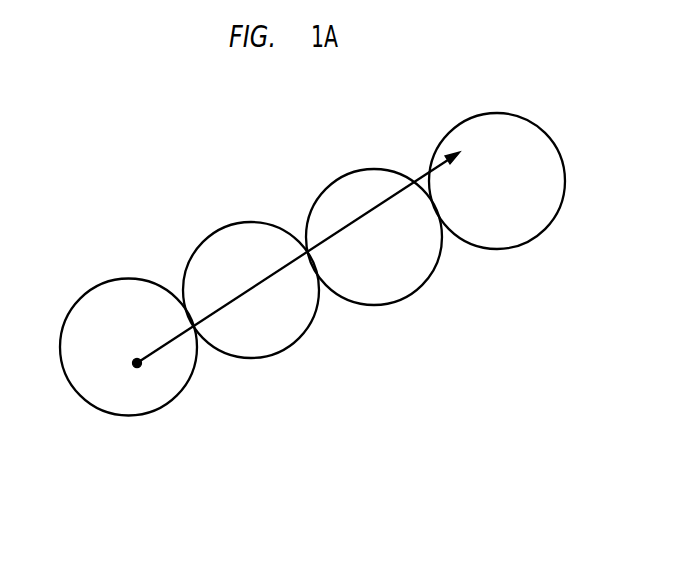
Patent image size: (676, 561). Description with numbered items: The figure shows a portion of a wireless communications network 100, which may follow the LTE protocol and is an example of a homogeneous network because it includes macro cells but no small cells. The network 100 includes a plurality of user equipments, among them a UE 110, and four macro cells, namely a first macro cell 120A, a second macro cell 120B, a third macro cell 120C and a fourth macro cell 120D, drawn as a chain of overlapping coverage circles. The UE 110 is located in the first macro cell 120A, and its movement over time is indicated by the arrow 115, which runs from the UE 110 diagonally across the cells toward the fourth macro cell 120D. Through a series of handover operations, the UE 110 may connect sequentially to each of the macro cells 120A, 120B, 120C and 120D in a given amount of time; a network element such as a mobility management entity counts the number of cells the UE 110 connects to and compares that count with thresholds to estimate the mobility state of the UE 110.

The wireless communications network 100 is at (64, 190).
The user equipment (UE) 110 is at (126, 346).
The arrow 115 is at (425, 177).
The first macro cell 120A is at (128, 363).
The second macro cell 120B is at (251, 306).
The third macro cell 120C is at (374, 252).
The fourth macro cell 120D is at (497, 197).